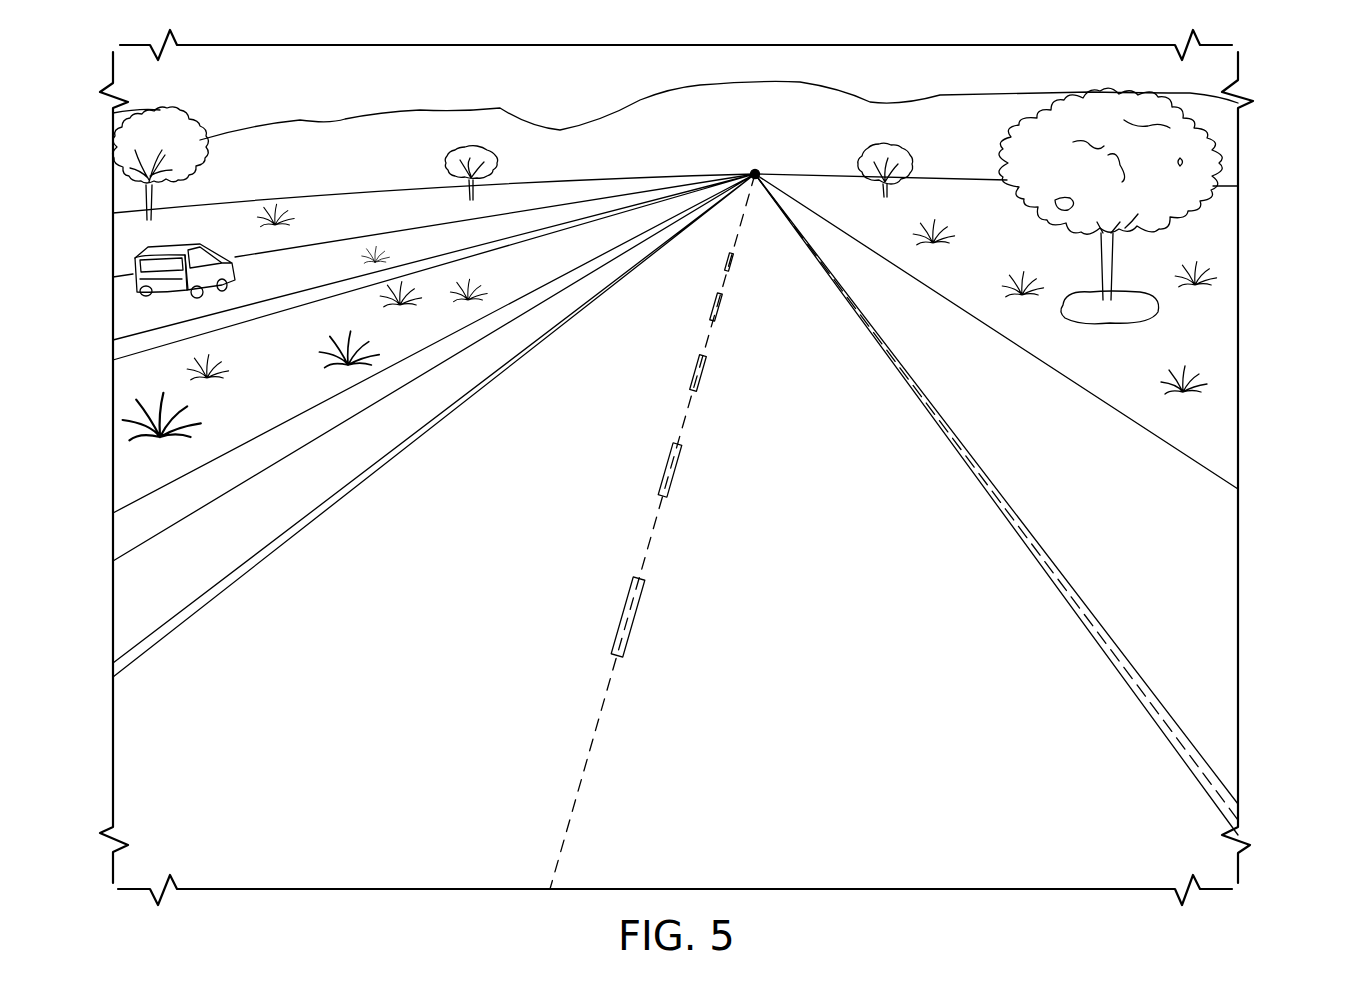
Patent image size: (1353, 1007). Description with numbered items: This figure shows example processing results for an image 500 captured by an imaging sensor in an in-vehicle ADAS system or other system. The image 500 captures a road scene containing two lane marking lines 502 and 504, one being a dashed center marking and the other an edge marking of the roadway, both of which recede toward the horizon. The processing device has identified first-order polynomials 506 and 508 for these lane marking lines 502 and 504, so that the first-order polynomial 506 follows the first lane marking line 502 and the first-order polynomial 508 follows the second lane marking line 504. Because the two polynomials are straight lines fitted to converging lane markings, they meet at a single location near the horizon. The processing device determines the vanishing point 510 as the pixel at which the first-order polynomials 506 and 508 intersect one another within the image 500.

The image 500 is at (1284, 108).
The lane marking line 502 is at (641, 618).
The lane marking line 504 is at (1064, 588).
The first-order polynomial 506 is at (646, 548).
The first-order polynomial 508 is at (1127, 690).
The vanishing point 510 is at (758, 168).